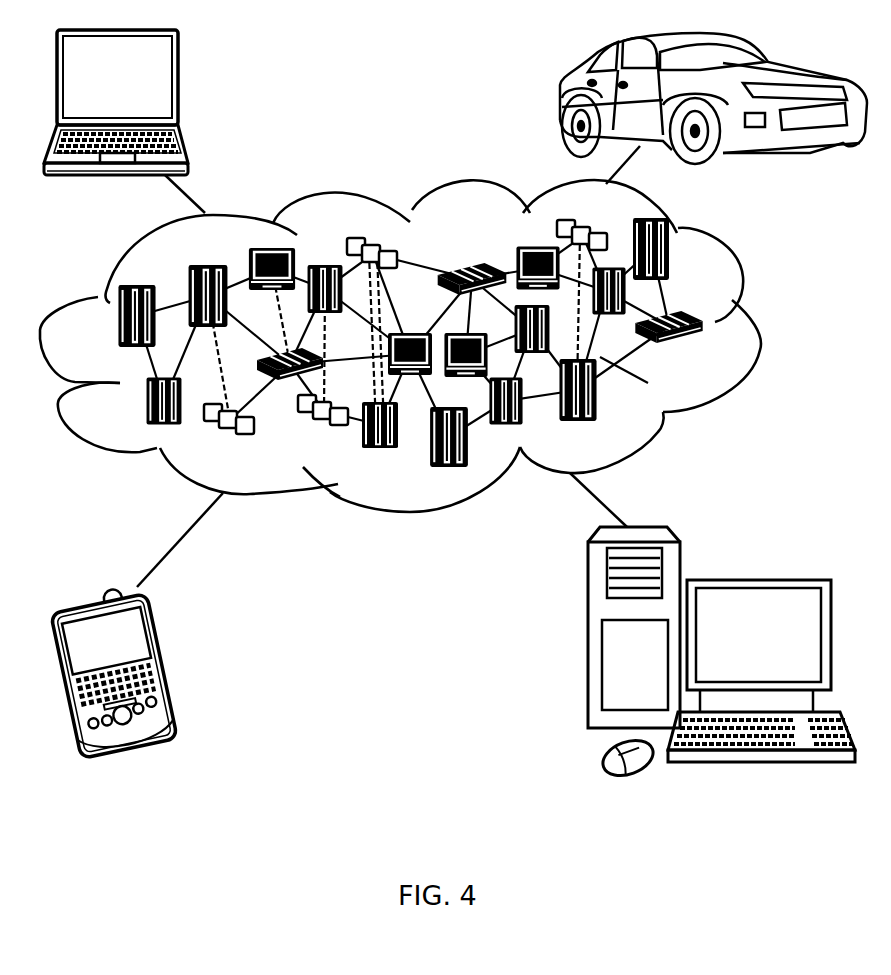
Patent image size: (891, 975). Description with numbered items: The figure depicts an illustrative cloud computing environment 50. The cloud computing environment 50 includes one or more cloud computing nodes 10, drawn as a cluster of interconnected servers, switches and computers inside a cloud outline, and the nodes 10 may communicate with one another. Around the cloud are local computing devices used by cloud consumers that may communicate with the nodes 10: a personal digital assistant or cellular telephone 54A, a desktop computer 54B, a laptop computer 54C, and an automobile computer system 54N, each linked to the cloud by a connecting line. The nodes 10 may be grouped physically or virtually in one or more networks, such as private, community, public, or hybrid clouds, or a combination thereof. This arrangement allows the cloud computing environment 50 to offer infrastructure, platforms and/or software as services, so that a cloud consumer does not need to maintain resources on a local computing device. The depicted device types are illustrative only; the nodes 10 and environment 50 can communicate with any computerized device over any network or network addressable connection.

The cloud computing node 10 is at (713, 357).
The cloud computing environment 50 is at (757, 323).
The personal digital assistant or cellular telephone 54A is at (172, 662).
The desktop computer 54B is at (765, 578).
The laptop computer 54C is at (178, 82).
The automobile computer system 54N is at (566, 99).